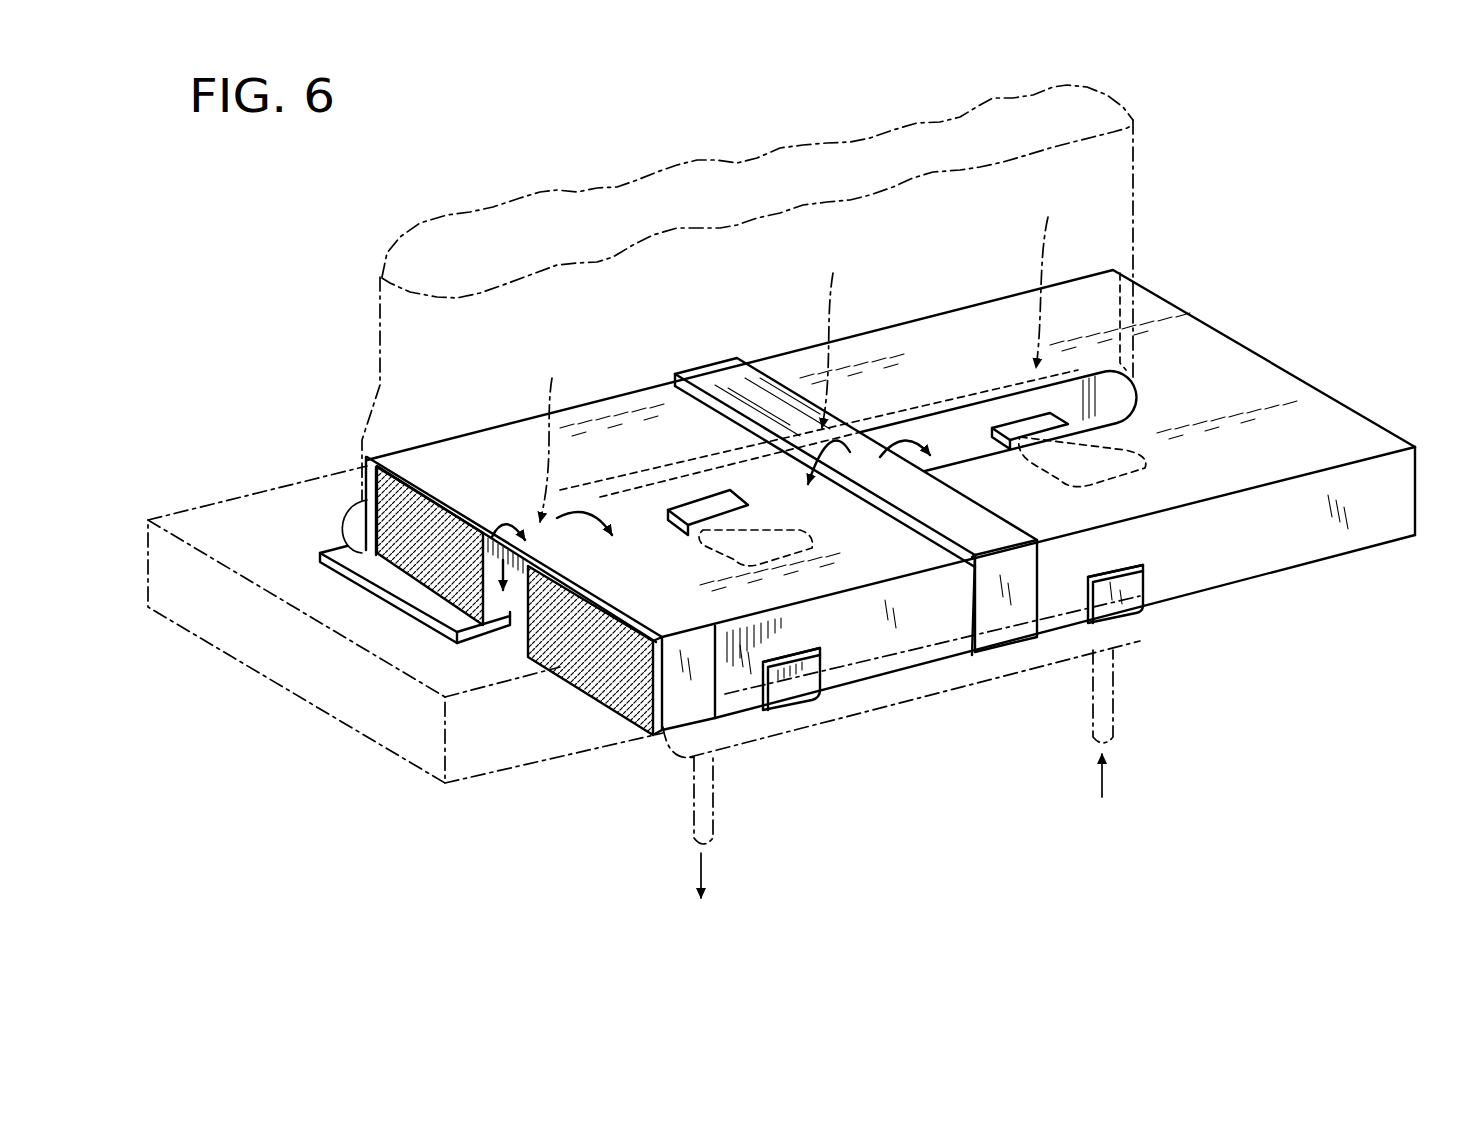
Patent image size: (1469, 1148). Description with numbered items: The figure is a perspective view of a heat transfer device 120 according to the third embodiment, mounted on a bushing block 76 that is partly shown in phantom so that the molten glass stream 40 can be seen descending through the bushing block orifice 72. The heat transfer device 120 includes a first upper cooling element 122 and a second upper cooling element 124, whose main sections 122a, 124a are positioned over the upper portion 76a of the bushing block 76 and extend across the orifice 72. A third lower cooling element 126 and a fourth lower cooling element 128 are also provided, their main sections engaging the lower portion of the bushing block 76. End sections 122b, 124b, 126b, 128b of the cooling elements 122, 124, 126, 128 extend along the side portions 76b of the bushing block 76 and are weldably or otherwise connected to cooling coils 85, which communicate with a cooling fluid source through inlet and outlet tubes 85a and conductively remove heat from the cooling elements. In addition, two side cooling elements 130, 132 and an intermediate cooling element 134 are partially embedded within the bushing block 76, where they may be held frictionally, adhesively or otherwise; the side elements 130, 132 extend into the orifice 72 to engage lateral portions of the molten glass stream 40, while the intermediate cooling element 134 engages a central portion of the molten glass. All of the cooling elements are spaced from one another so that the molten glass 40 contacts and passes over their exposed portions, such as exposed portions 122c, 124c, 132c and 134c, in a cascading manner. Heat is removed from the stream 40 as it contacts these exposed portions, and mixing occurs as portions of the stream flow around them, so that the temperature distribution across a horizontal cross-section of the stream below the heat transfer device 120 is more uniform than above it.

The molten glass stream 40 is at (1105, 176).
The bushing block orifice 72 is at (1108, 397).
The bushing block 76 is at (1342, 423).
The upper portion of the bushing block 76a is at (1262, 385).
The side portions of the bushing block 76b is at (1360, 530).
The cooling coils 85 is at (352, 528).
The inlet and outlet tubes 85a is at (710, 800).
The heat transfer device 120 is at (625, 815).
The first upper cooling element 122 is at (416, 455).
The main section of the first upper cooling element 122a is at (650, 605).
The end section of the first upper cooling element 122b is at (675, 672).
The exposed portion of the first upper cooling element 122c is at (537, 522).
The second upper cooling element 124 is at (731, 362).
The main section of the second upper cooling element 124a is at (988, 532).
The end section of the second upper cooling element 124b is at (995, 617).
The exposed portion of the second upper cooling element 124c is at (855, 455).
The third lower cooling element 126 is at (793, 690).
The end section of the third lower cooling element 126b is at (813, 665).
The fourth lower cooling element 128 is at (1137, 603).
The end section of the fourth lower cooling element 128b is at (1137, 583).
The side cooling element 130 is at (425, 605).
The side cooling element 132 is at (1140, 468).
The exposed portion of the side cooling element 132c is at (1033, 432).
The intermediate cooling element 134 is at (813, 541).
The exposed portion of the intermediate cooling element 134c is at (708, 510).